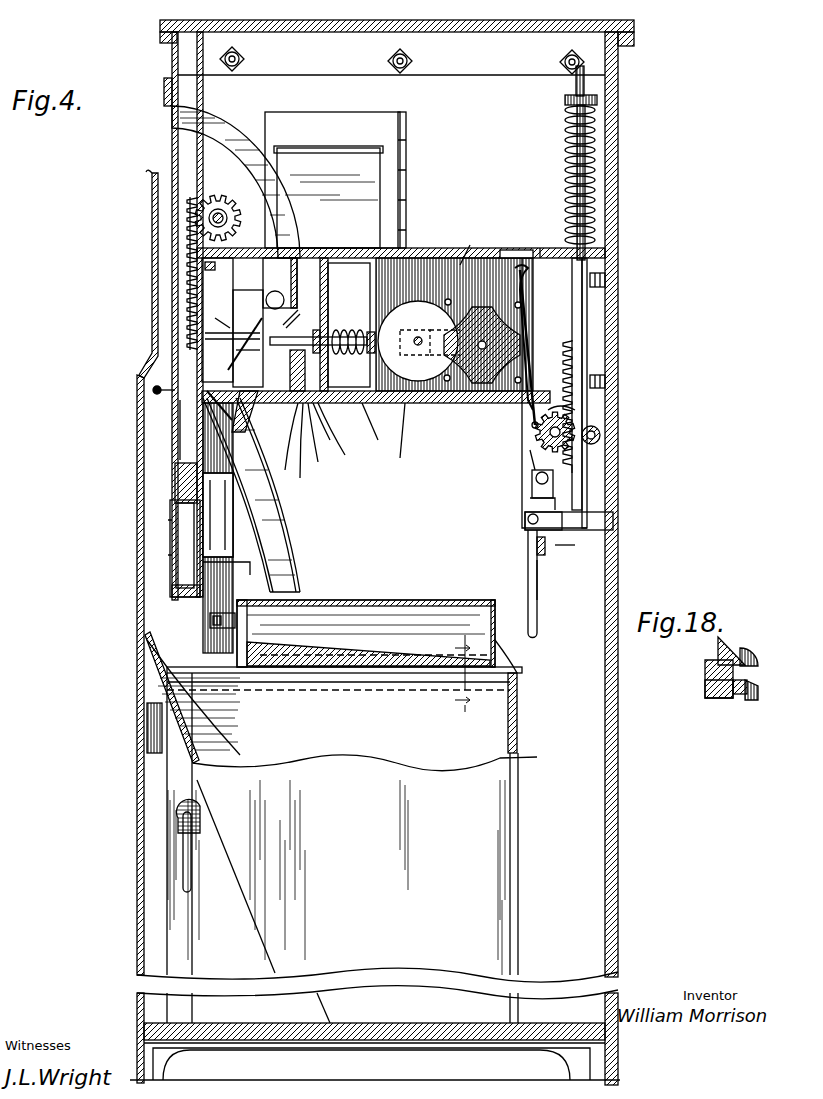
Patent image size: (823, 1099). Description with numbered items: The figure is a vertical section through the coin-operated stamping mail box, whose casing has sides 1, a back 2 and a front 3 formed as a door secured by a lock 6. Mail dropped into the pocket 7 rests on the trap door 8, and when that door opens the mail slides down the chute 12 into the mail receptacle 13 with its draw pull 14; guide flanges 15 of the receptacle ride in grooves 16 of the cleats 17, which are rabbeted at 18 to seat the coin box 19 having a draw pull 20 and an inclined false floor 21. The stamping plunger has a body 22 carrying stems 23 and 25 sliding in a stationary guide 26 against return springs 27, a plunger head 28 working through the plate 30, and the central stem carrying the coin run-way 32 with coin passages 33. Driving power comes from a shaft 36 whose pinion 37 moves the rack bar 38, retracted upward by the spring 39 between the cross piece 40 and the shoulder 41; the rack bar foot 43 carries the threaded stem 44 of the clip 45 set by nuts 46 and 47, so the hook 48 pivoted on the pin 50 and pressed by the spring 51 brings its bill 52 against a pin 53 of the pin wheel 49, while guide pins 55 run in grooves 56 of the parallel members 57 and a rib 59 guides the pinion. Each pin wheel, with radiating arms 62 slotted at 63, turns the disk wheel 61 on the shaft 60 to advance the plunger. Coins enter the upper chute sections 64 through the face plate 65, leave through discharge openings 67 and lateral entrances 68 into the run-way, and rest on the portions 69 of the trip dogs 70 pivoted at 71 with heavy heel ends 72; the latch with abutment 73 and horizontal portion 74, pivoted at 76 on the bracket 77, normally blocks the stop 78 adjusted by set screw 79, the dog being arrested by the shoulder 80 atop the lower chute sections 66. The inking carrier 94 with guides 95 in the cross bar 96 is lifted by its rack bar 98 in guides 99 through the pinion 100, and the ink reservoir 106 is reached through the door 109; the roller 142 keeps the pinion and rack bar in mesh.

In FIG. 4, the sides 1 is at (500, 648).
In FIG. 4, the back 2 is at (616, 758).
In FIG. 4, the front 3 is at (137, 790).
In FIG. 4, the lock 6 is at (147, 740).
In FIG. 4, the pocket 7 is at (172, 283).
In FIG. 4, the trap door 8 is at (160, 394).
In FIG. 4, the chute 12 is at (160, 553).
In FIG. 4, the mail receptacle 13 is at (170, 705).
In FIG. 18, the mail receptacle 13 is at (752, 694).
In FIG. 4, the draw pull 14 is at (200, 852).
In FIG. 18, the guide flanges 15 is at (736, 694).
In FIG. 4, the grooves 16 is at (520, 690).
In FIG. 18, the grooves 16 is at (712, 692).
In FIG. 4, the cleats 17 is at (515, 680).
In FIG. 18, the cleats 17 is at (705, 682).
In FIG. 4, the rabbet 18 is at (284, 302).
In FIG. 18, the rabbet 18 is at (718, 663).
In FIG. 4, the coin box 19 is at (427, 600).
In FIG. 18, the coin box 19 is at (748, 650).
In FIG. 4, the draw pull 20 is at (218, 640).
In FIG. 4, the inclined false floor 21 is at (320, 652).
In FIG. 4, the plunger body 22 is at (368, 330).
In FIG. 4, the plunger stem 23 is at (210, 337).
In FIG. 4, the plunger stem 25 is at (299, 320).
In FIG. 4, the stationary guide 26 is at (349, 325).
In FIG. 4, the plunger return springs 27 is at (347, 354).
In FIG. 4, the plunger head 28 is at (225, 358).
In FIG. 4, the plate 30 is at (152, 175).
In FIG. 4, the coin run-way 32 is at (226, 318).
In FIG. 4, the coin passages 33 is at (248, 346).
In FIG. 4, the horizontal shaft 36 is at (575, 410).
In FIG. 4, the pinion 37 is at (565, 430).
In FIG. 4, the rack bar 38 is at (585, 345).
In FIG. 4, the coiled expansion spring 39 is at (597, 185).
In FIG. 4, the cross piece 40 is at (518, 248).
In FIG. 4, the shoulder 41 is at (597, 100).
In FIG. 4, the foot 43 is at (590, 530).
In FIG. 4, the threaded stem 44 is at (575, 545).
In FIG. 4, the hook holding clip 45 is at (555, 490).
In FIG. 4, the adjusting nut 46 is at (525, 522).
In FIG. 4, the adjusting nut 47 is at (530, 527).
In FIG. 4, the plunger operating hook 48 is at (528, 432).
In FIG. 4, the pin wheel 49 is at (505, 404).
In FIG. 4, the pin 50 is at (530, 505).
In FIG. 4, the spring 51 is at (535, 480).
In FIG. 4, the bill 52 is at (530, 240).
In FIG. 4, the pins 53 is at (522, 300).
In FIG. 4, the guide pins 55 is at (545, 552).
In FIG. 4, the guide grooves 56 is at (538, 596).
In FIG. 4, the parallel members 57 is at (528, 600).
In FIG. 4, the guiding rib 59 is at (590, 322).
In FIG. 4, the shaft 60 is at (418, 345).
In FIG. 4, the disk shaped wheels 61 is at (408, 433).
In FIG. 4, the radiating arms 62 is at (475, 239).
In FIG. 4, the slot 63 is at (540, 325).
In FIG. 4, the coin chute upper sections 64 is at (258, 126).
In FIG. 4, the face plate 65 is at (166, 90).
In FIG. 4, the lower stationary chute sections 66 is at (298, 508).
In FIG. 4, the discharge openings 67 is at (262, 292).
In FIG. 4, the lateral entrances 68 is at (248, 338).
In FIG. 4, the forwardly projecting portions 69 is at (268, 420).
In FIG. 4, the trip dogs 70 is at (283, 439).
In FIG. 4, the pivot 71 is at (311, 443).
In FIG. 4, the heel ends 72 is at (322, 435).
In FIG. 4, the abutment portion 73 is at (380, 424).
In FIG. 4, the horizontal portion 74 is at (292, 368).
In FIG. 4, the pivot 76 is at (331, 423).
In FIG. 4, the bracket 77 is at (342, 432).
In FIG. 4, the stop 78 is at (532, 460).
In FIG. 4, the set screw 79 is at (292, 283).
In FIG. 4, the shoulder 80 is at (222, 412).
In FIG. 4, the carrier 94 is at (182, 440).
In FIG. 4, the guides 95 is at (183, 532).
In FIG. 4, the cross bar 96 is at (177, 478).
In FIG. 4, the rack bar 98 is at (195, 247).
In FIG. 4, the guides 99 is at (187, 220).
In FIG. 4, the pinion 100 is at (222, 192).
In FIG. 4, the ink reservoir 106 is at (330, 168).
In FIG. 4, the door 109 is at (325, 116).
In FIG. 4, the bolt 142 is at (600, 436).